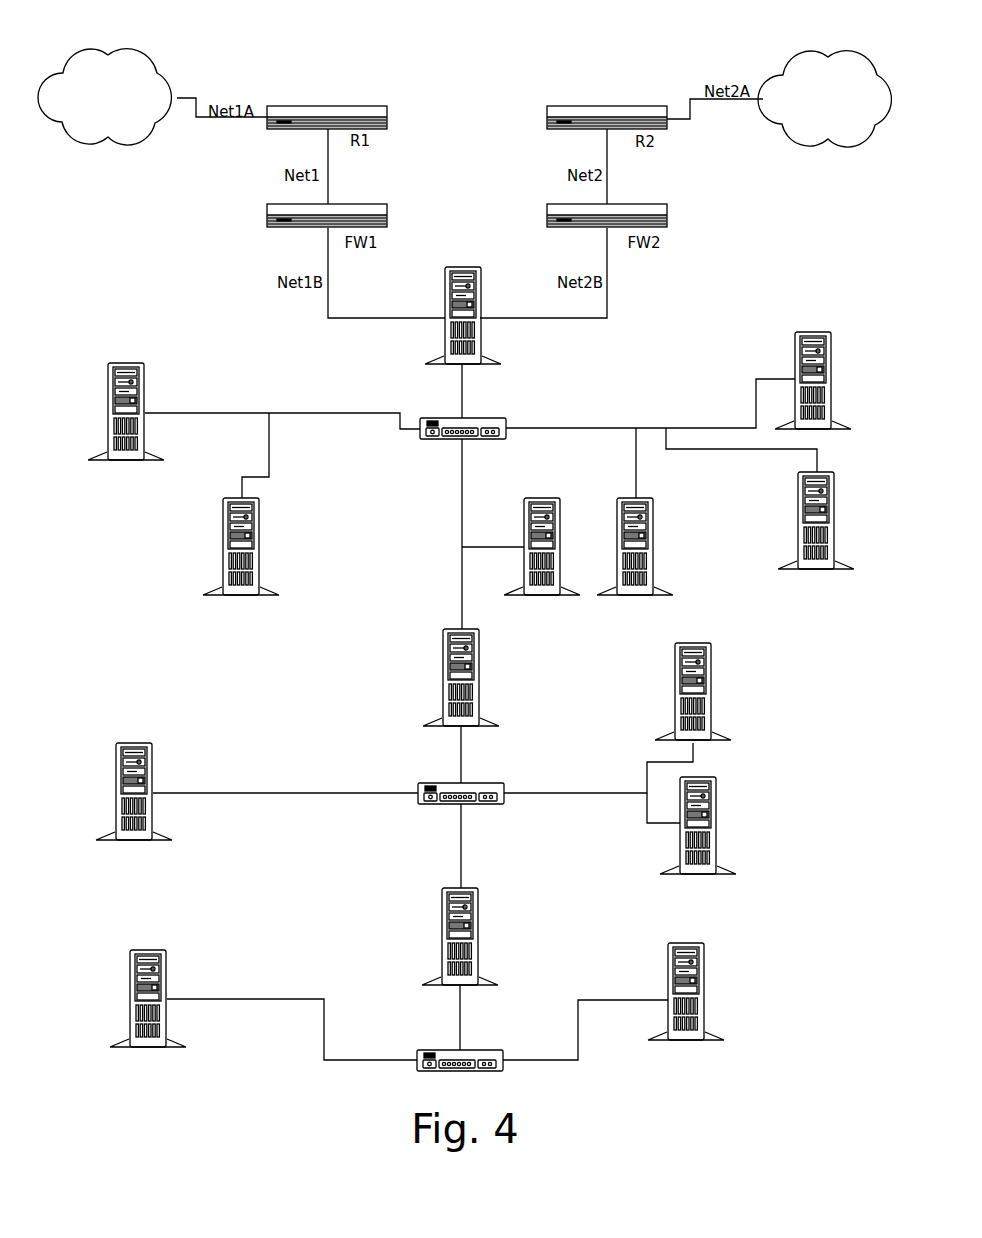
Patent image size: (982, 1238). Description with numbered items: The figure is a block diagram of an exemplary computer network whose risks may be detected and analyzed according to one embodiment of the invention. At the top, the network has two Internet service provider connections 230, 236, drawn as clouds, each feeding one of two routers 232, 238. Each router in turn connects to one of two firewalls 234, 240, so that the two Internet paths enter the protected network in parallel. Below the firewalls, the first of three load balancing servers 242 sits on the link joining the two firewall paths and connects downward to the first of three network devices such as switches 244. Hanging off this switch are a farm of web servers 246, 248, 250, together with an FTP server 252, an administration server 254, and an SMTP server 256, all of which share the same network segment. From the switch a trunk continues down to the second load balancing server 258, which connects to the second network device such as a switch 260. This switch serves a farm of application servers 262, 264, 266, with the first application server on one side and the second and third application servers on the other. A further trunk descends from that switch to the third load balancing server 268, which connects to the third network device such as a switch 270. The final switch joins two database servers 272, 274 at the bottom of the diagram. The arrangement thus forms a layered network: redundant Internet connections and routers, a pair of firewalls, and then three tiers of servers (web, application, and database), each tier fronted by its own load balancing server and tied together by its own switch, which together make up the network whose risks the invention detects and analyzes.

The Internet service provider connection 230 is at (108, 55).
The router 232 is at (357, 106).
The firewall 234 is at (357, 204).
The Internet service provider connection 236 is at (828, 57).
The router 238 is at (640, 106).
The firewall 240 is at (640, 204).
The load balancing server 242 is at (463, 267).
The network device (switch) 244 is at (489, 418).
The web server 246 is at (260, 546).
The web server 248 is at (823, 332).
The web server 250 is at (551, 498).
The FTP server 252 is at (133, 363).
The administration server 254 is at (645, 498).
The SMTP server 256 is at (827, 472).
The load balancing server 258 is at (479, 678).
The network device (switch) 260 is at (482, 783).
The application server 262 is at (146, 743).
The application server 264 is at (702, 643).
The application server 266 is at (708, 777).
The load balancing server 268 is at (480, 936).
The network device (switch) 270 is at (481, 1050).
The database server 272 is at (161, 950).
The database server 274 is at (699, 943).